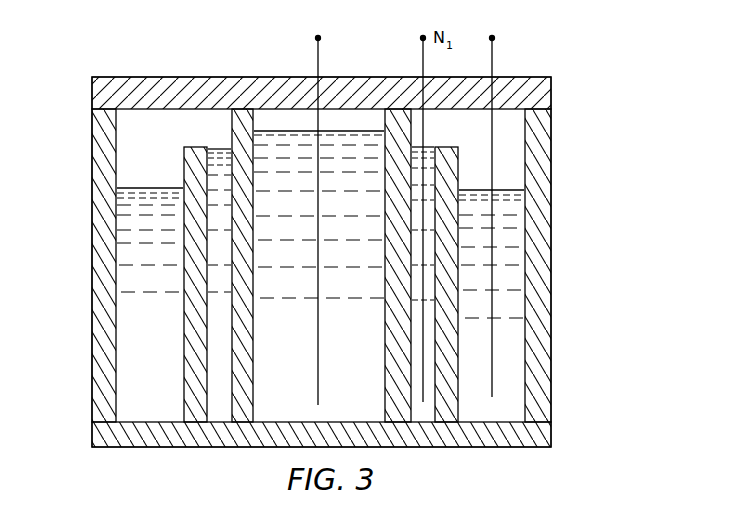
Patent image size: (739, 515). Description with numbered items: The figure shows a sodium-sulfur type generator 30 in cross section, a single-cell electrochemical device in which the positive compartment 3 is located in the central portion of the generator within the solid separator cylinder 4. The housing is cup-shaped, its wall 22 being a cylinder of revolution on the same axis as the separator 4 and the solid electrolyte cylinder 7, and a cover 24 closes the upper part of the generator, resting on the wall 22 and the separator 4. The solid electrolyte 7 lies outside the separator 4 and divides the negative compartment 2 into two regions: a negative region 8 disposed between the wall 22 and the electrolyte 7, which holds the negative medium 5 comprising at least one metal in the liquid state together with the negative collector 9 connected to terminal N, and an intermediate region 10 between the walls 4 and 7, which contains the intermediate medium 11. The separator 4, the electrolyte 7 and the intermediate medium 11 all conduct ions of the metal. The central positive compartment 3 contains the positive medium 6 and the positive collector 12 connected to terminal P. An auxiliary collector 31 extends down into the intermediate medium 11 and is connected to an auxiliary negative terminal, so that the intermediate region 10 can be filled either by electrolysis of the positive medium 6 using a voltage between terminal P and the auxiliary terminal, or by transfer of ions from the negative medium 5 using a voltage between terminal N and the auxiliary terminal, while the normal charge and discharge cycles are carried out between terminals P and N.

The generator 30 is at (578, 75).
The cover 24 is at (97, 89).
The wall 22 is at (540, 225).
The solid separator 4 is at (400, 316).
The solid electrolyte 7 is at (196, 378).
The auxiliary collector 31 is at (420, 160).
The negative region 8 is at (148, 242).
The negative compartment 2 is at (160, 128).
The intermediate medium 11 is at (221, 197).
The intermediate region 10 is at (219, 328).
The positive compartment 3 is at (281, 277).
The positive medium 6 is at (350, 356).
The negative medium 5 is at (510, 203).
The positive collector 12 is at (322, 386).
The negative collector 9 is at (494, 261).